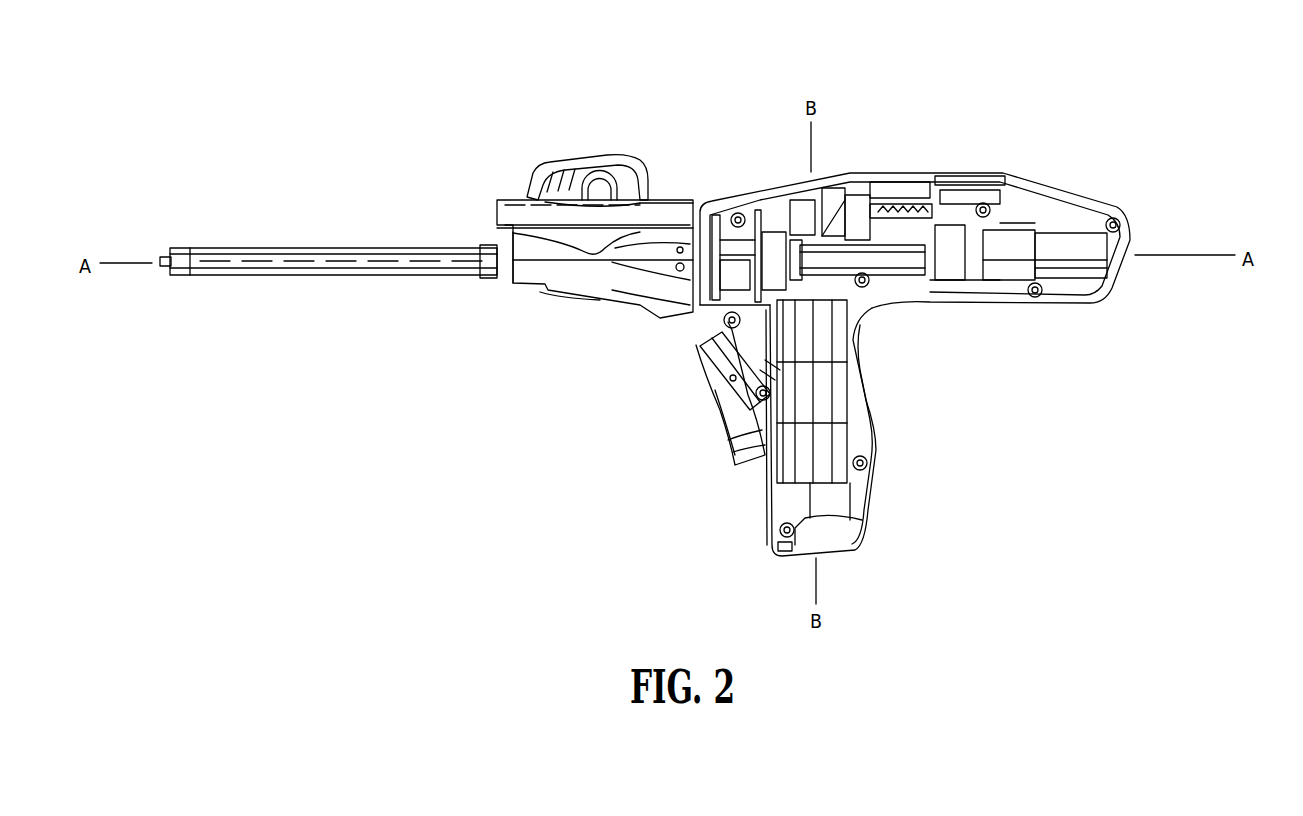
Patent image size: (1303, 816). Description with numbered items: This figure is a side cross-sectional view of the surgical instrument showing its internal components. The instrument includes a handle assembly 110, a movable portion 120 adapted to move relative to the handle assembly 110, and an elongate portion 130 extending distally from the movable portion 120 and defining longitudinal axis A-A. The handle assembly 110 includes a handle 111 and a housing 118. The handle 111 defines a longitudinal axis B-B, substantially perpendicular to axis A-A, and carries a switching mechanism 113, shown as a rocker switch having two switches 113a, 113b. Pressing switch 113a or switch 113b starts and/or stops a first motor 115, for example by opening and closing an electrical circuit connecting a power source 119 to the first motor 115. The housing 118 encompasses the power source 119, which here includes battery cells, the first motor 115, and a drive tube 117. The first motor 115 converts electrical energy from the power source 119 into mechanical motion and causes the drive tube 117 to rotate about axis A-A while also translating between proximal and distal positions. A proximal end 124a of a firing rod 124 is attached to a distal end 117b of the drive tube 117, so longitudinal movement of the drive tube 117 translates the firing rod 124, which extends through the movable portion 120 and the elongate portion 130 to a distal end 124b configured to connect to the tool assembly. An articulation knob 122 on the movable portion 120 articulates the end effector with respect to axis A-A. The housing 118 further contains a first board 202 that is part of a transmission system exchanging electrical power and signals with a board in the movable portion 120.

The handle assembly 110 is at (913, 156).
The handle 111 is at (878, 480).
The switching mechanism 113 is at (690, 418).
The switch 113a is at (708, 372).
The switch 113b is at (730, 440).
The first motor 115 is at (1070, 280).
The drive tube 117 is at (897, 296).
The distal end of drive tube 117b is at (868, 200).
The housing 118 is at (940, 178).
The power source 119 is at (838, 390).
The movable portion 120 is at (625, 94).
The articulation knob 122 is at (570, 165).
The firing rod 124 is at (693, 296).
The proximal end of firing rod 124a is at (768, 190).
The distal end of firing rod 124b is at (166, 268).
The elongate portion 130 is at (322, 233).
The first board 202 is at (757, 460).